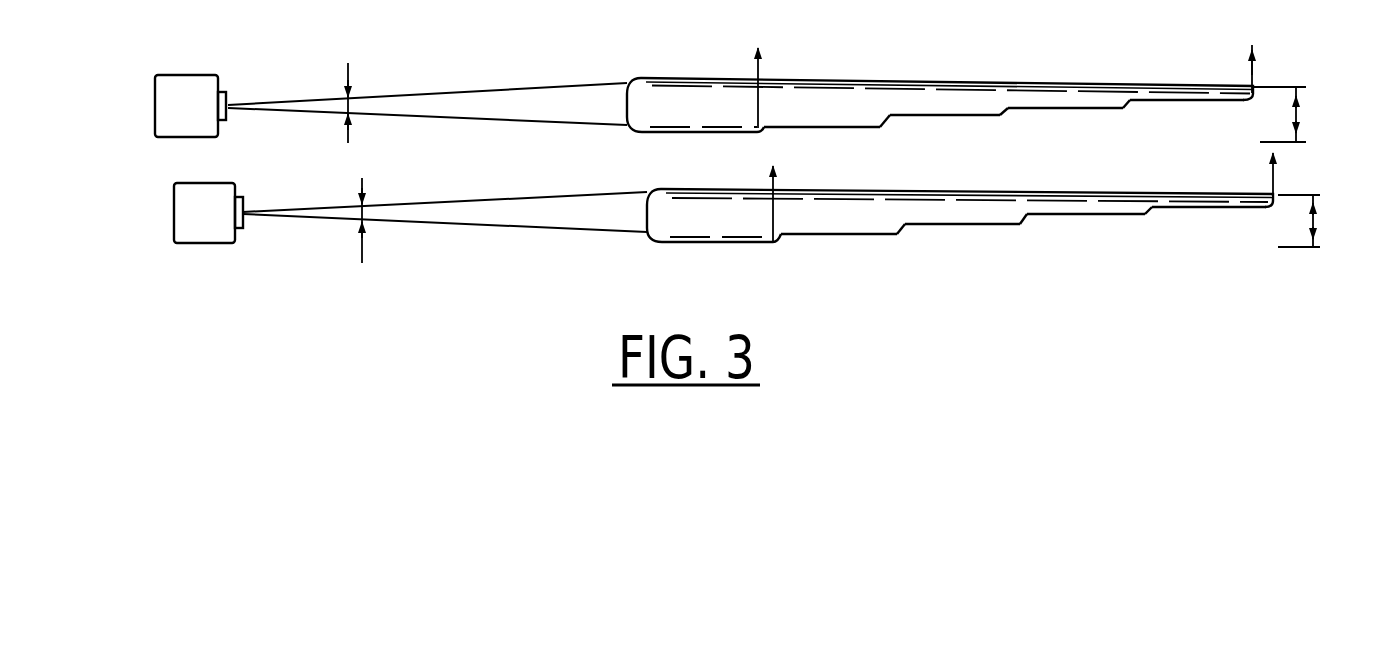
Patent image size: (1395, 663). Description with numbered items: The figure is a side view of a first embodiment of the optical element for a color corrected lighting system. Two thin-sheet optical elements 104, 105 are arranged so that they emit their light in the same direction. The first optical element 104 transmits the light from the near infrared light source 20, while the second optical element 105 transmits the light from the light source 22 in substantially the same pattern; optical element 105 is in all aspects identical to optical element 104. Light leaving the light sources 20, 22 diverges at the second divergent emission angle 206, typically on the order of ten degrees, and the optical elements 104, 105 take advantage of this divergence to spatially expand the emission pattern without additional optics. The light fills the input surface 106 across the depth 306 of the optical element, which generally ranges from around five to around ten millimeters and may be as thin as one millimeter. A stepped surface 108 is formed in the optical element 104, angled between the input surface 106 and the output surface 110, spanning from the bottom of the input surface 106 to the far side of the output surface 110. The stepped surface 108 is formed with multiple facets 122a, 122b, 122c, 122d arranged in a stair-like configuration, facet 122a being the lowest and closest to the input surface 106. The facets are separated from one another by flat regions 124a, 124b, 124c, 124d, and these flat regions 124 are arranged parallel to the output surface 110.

The near infrared light source 20 is at (168, 136).
The light source 22 is at (200, 238).
The second divergent emission angle 206 is at (350, 146).
The first optical element 104 is at (947, 62).
The second optical element 105 is at (656, 227).
The input surface 106 is at (646, 219).
The stepped surface 108 is at (703, 134).
The output surface 110 is at (718, 76).
The facet 122a is at (760, 129).
The facet 122b is at (886, 117).
The facet 122c is at (1006, 110).
The facet 122d is at (1128, 102).
The flat region 124a is at (847, 129).
The flat region 124b is at (982, 117).
The flat region 124c is at (1113, 110).
The flat region 124d is at (1237, 102).
The flat regions 124 is at (1248, 209).
The depth 306 is at (1300, 117).